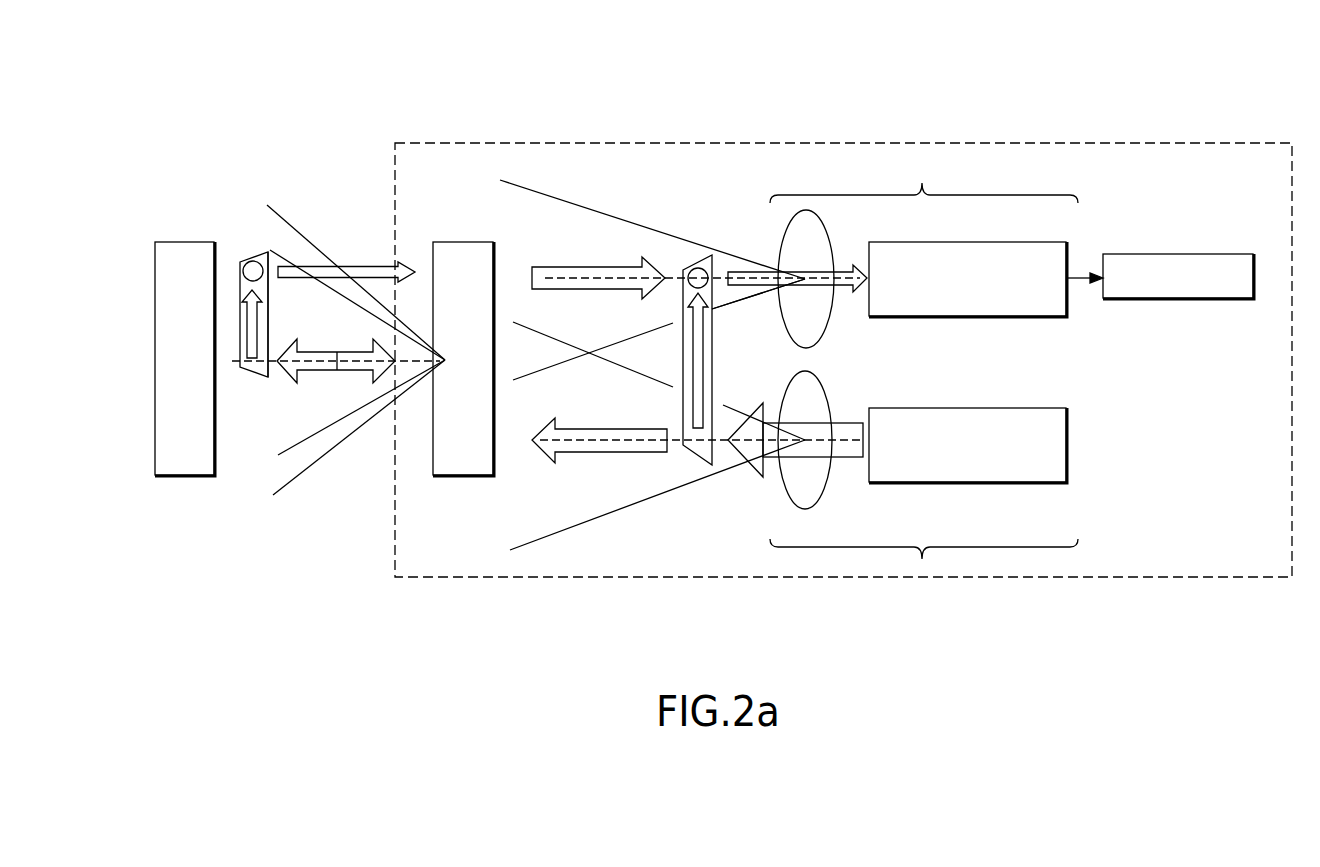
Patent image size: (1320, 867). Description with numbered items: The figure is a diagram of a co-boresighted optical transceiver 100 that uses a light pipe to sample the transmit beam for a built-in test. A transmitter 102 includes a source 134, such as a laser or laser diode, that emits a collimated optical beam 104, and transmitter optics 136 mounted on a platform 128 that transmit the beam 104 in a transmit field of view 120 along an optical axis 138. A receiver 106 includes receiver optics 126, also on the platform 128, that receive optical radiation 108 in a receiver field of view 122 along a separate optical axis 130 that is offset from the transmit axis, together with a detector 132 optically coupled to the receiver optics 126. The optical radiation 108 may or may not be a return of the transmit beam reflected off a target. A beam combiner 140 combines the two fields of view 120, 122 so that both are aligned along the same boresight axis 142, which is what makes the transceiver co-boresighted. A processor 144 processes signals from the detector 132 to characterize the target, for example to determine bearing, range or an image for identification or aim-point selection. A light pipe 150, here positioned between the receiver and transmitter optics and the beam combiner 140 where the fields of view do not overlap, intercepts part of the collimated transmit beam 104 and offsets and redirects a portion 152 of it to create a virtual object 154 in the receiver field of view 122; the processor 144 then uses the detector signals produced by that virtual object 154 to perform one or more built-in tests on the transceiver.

The co-boresighted optical transceiver 100 is at (285, 80).
The transmitter 102 is at (924, 559).
The collimated optical beam 104 is at (855, 404).
The receiver 106 is at (924, 178).
The optical radiation 108 is at (848, 308).
The transmit field of view 120 is at (279, 453).
The receiver field of view 122 is at (182, 242).
The receiver optics 126 is at (828, 215).
The platform 128 is at (1205, 537).
The optical axis 130 is at (724, 275).
The detector 132 is at (1066, 242).
The source 134 is at (1068, 440).
The transmitter optics 136 is at (785, 485).
The optical axis 138 is at (748, 445).
The beam combiner 140 is at (460, 242).
The boresight axis 142 is at (264, 378).
The processor 144 is at (1183, 254).
The light pipe 150 is at (271, 250).
The redirected portion of the collimated transmit beam 152 is at (266, 330).
The virtual object 154 is at (251, 263).